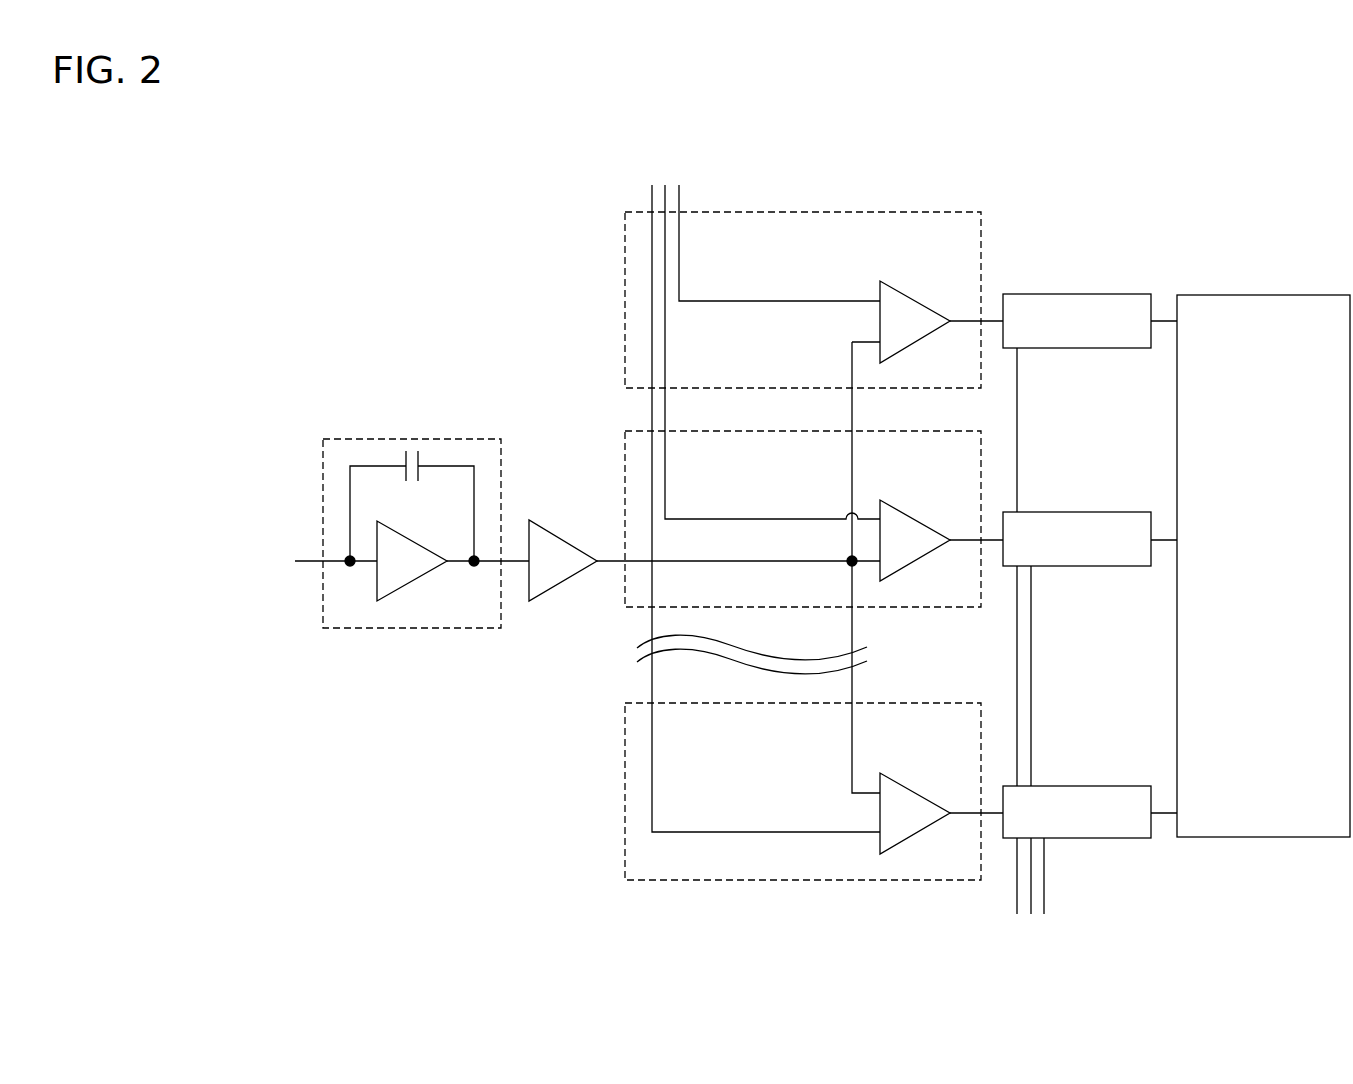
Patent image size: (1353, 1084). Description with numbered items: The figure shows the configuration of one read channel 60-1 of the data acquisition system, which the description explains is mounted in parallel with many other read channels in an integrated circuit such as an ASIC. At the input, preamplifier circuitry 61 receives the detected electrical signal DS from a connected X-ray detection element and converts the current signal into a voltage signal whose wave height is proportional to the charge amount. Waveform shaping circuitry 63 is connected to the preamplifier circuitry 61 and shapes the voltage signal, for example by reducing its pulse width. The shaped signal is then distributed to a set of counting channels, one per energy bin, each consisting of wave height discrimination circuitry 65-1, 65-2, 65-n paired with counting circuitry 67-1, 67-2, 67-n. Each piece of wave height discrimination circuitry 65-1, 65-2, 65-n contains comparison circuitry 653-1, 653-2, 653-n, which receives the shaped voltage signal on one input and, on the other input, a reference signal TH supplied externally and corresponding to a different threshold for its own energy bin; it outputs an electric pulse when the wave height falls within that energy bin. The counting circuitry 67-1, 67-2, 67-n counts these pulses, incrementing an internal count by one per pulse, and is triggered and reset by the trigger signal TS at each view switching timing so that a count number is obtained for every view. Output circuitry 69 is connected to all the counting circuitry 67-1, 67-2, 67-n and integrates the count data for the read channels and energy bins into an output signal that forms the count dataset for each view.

The signal processing circuitry 60-1 is at (868, 157).
The preamplifier circuitry 61 is at (447, 438).
The waveform shaping circuitry 63 is at (567, 540).
The wave height discrimination circuitry 65-1 is at (803, 283).
The wave height discrimination circuitry 65-2 is at (803, 502).
The wave height discrimination circuitry 65-n is at (803, 775).
The comparison circuitry 653-1 is at (915, 303).
The comparison circuitry 653-2 is at (915, 522).
The comparison circuitry 653-n is at (915, 795).
The counting circuitry 67-1 is at (1068, 294).
The counting circuitry 67-2 is at (1068, 512).
The counting circuitry 67-n is at (1068, 786).
The output circuitry 69 is at (1294, 295).